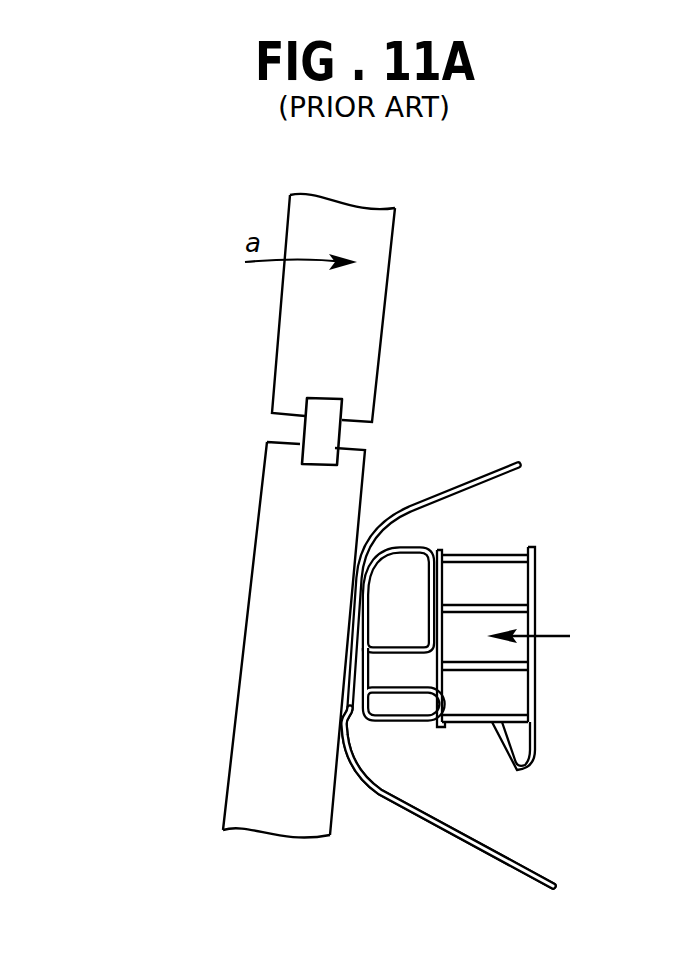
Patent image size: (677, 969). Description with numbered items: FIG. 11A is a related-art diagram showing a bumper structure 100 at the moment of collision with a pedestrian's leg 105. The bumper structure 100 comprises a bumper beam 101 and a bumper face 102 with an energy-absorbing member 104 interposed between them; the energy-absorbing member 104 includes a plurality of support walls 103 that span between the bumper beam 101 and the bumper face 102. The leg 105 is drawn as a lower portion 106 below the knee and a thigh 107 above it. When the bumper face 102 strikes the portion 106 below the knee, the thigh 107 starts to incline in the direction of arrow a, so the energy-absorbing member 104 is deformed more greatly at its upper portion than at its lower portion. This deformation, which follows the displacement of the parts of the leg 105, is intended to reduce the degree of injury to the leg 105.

The bumper structure 100 is at (381, 571).
The bumper beam 101 is at (510, 547).
The bumper face 102 is at (440, 490).
The support walls 103 is at (287, 652).
The energy-absorbing member 104 is at (408, 736).
The pedestrian's leg 105 is at (305, 516).
The portion below the knee 106 is at (278, 512).
The thigh 107 is at (367, 325).